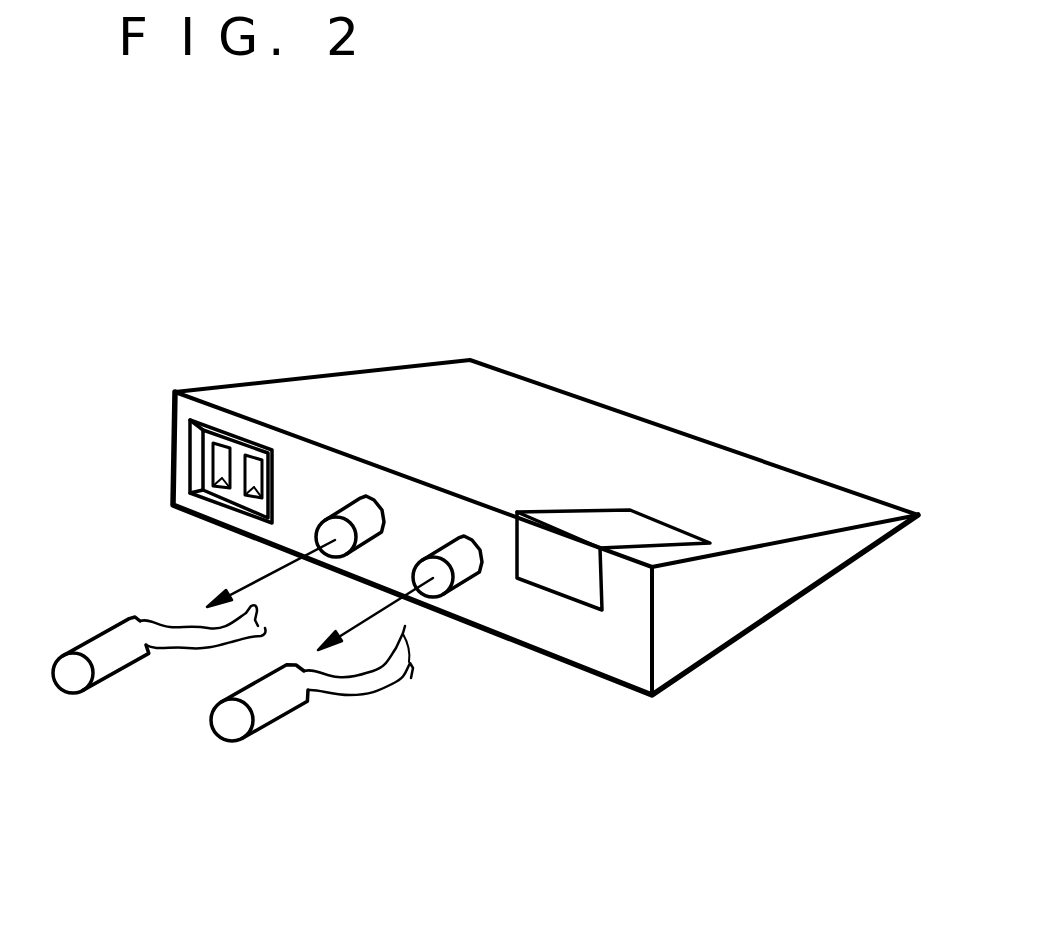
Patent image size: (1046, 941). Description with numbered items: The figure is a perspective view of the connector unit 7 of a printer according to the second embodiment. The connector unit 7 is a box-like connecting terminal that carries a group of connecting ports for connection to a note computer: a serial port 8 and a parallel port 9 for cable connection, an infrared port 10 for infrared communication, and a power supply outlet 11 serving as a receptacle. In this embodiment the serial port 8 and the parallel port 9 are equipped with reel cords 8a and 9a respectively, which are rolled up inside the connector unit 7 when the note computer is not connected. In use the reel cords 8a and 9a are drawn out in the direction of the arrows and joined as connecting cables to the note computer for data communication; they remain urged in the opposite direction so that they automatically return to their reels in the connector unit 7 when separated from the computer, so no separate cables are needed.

The connector unit 7 is at (515, 211).
The serial port 8 is at (363, 512).
The reel cord 8a is at (165, 620).
The parallel port 9 is at (463, 557).
The reel cord 9a is at (382, 677).
The infrared port 10 is at (555, 578).
The power supply outlet 11 is at (217, 435).